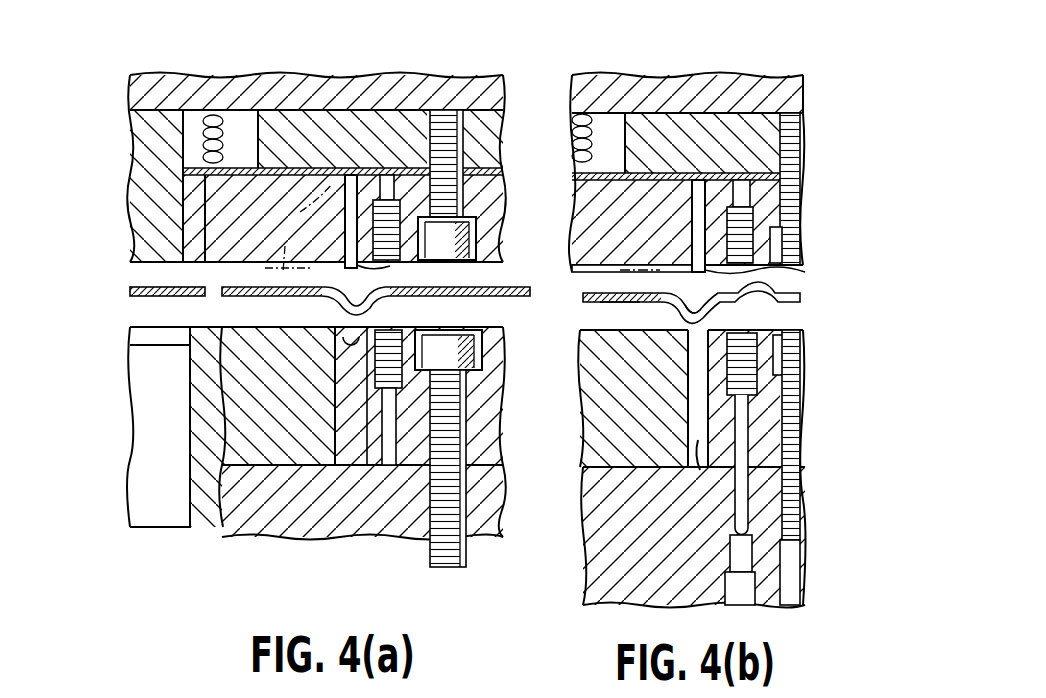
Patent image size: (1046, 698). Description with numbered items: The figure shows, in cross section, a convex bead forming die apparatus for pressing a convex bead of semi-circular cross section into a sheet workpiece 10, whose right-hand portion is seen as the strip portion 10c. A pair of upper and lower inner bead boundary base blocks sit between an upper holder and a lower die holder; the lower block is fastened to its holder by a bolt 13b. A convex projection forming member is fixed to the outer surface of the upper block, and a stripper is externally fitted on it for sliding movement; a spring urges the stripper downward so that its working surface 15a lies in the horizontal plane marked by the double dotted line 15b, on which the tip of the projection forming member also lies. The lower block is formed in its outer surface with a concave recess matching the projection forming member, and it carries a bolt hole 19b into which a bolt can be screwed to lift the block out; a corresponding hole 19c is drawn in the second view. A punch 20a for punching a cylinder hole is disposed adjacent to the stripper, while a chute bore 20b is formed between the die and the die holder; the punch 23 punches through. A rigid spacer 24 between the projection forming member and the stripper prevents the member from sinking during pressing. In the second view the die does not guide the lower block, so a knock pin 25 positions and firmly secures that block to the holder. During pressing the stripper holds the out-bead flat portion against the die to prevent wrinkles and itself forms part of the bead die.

The strip material 10 is at (128, 293).
The strip portion 10c is at (798, 305).
The bolt 13b is at (805, 415).
The working surface 15a is at (238, 272).
The double dotted line 15b is at (298, 228).
The bolt hole 19b is at (395, 320).
The lower guide pin 19c is at (760, 360).
The punch 20a is at (128, 178).
The chute bore 20b is at (128, 413).
The punch 23 is at (351, 175).
The rigid spacer 24 is at (805, 143).
The knock pin 25 is at (760, 512).